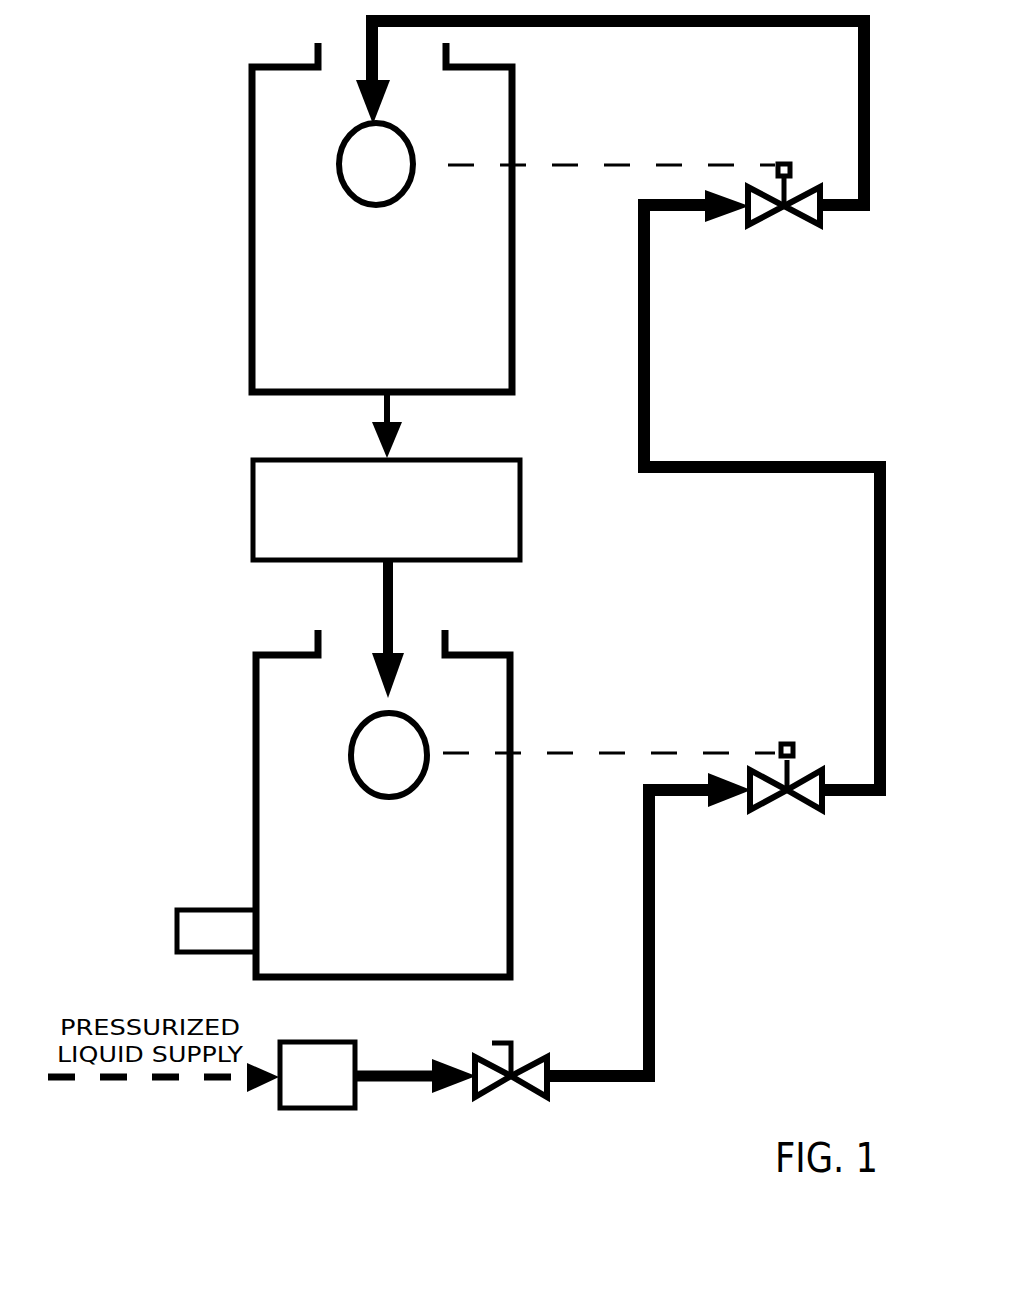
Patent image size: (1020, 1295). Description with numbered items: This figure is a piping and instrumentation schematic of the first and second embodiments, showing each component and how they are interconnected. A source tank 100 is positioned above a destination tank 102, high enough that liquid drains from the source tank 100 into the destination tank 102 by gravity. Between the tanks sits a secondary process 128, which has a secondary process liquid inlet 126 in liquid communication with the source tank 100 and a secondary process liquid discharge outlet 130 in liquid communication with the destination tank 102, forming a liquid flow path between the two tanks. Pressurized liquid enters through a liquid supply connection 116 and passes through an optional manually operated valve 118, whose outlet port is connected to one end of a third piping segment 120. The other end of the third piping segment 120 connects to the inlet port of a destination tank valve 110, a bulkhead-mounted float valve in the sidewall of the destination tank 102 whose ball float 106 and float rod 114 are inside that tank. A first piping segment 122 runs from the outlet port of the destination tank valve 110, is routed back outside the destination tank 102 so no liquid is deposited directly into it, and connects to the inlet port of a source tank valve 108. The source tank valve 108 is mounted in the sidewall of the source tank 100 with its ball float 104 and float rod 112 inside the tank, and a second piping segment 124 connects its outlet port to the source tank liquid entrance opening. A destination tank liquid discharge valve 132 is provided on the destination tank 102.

The source tank 100 is at (252, 268).
The destination tank 102 is at (257, 823).
The ball float of the source tank valve 104 is at (339, 170).
The ball float of the destination tank valve 106 is at (351, 759).
The source tank valve 108 is at (798, 218).
The destination tank valve 110 is at (800, 798).
The float rod of the source tank valve 112 is at (722, 165).
The float rod of the destination tank valve 114 is at (713, 747).
The liquid supply connection 116 is at (315, 1109).
The manually operated valve 118 is at (523, 1088).
The third piping segment 120 is at (620, 1082).
The first piping segment 122 is at (874, 613).
The second piping segment 124 is at (858, 79).
The secondary process liquid inlet 126 is at (387, 412).
The secondary process 128 is at (253, 517).
The secondary process liquid discharge outlet 130 is at (388, 600).
The destination tank liquid discharge valve 132 is at (177, 933).